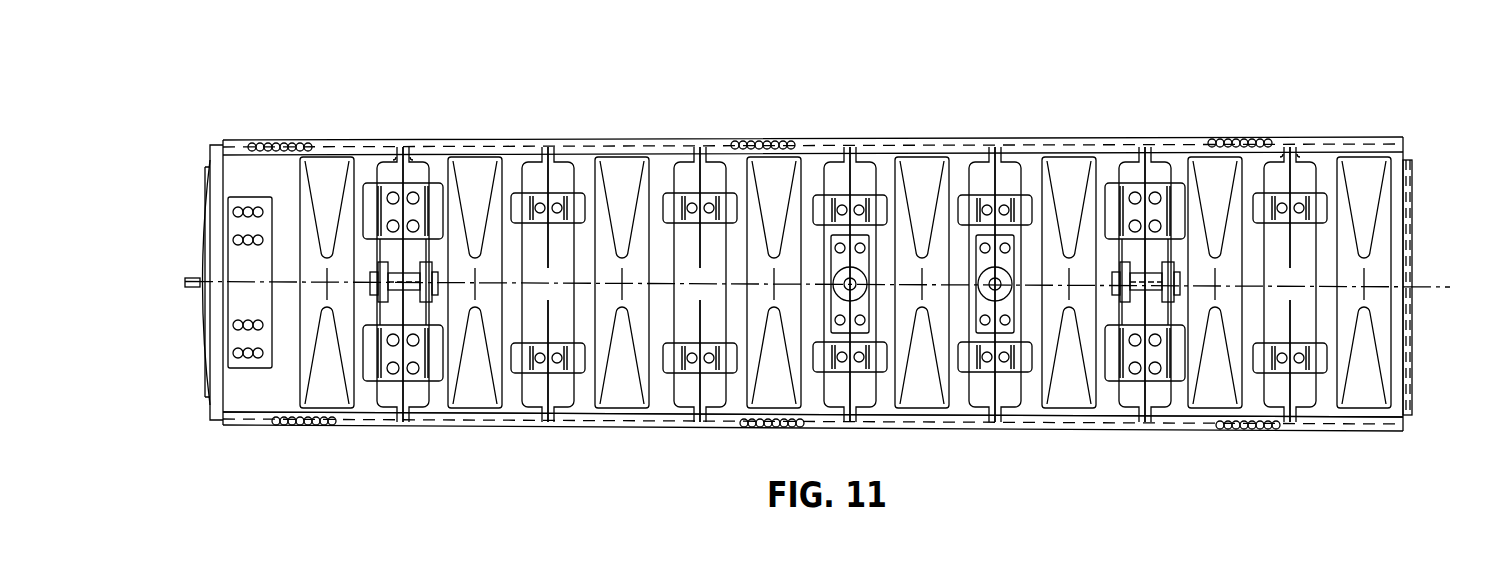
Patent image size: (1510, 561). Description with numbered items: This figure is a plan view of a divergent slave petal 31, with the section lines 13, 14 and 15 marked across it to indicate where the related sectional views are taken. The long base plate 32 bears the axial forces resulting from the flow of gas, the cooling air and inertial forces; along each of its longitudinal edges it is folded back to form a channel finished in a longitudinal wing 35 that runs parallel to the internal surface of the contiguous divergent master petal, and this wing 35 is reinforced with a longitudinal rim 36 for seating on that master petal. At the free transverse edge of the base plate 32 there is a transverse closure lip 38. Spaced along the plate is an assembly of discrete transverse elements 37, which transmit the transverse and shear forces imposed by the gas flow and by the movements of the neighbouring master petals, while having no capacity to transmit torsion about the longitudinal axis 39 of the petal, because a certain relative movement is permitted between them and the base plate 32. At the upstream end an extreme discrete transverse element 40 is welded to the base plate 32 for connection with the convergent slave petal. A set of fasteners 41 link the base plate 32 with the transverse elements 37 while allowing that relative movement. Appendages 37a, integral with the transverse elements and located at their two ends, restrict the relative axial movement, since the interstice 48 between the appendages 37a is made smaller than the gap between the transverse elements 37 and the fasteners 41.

The divergent slave petal 31 is at (840, 125).
The base plate 32 is at (208, 398).
The longitudinal wing 35 is at (1042, 422).
The rim 36 is at (1115, 420).
The discrete transverse elements 37 is at (1065, 180).
The appendages 37a is at (413, 160).
The transverse closure lip 38 is at (1412, 255).
The longitudinal axis 39 is at (1450, 287).
The extreme discrete transverse element 40 is at (270, 400).
The fasteners 41 is at (558, 367).
The interstice 48 is at (697, 125).
The section line 13 is at (400, 93).
The section line 14 is at (672, 317).
The section line 15 is at (996, 317).